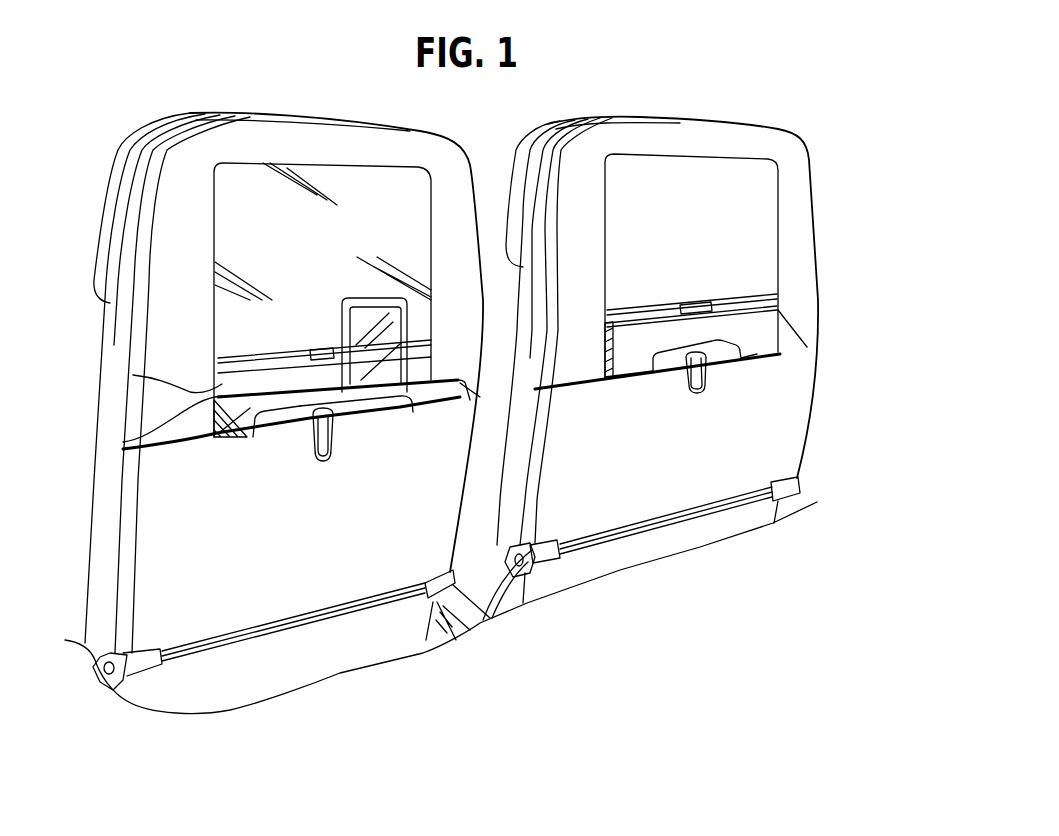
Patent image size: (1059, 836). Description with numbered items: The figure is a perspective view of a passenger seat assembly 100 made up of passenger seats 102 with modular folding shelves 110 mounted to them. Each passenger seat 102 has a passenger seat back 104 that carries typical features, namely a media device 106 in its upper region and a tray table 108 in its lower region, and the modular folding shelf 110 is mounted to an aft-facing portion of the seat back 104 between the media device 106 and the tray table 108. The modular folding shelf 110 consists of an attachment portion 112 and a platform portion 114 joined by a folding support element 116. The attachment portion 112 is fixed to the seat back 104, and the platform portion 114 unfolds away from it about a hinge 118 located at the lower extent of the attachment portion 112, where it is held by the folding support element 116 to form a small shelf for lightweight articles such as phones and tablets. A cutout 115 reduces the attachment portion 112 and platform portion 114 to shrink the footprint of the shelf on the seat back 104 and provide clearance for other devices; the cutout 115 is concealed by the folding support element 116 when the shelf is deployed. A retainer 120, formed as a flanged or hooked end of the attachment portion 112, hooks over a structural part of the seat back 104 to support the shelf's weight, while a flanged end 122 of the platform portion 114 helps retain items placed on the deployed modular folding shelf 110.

The passenger seat assembly 100 is at (716, 66).
The passenger seat 102 is at (312, 126).
The passenger seat back 104 is at (168, 333).
The media device 106 is at (293, 238).
The tray table 108 is at (396, 549).
The modular folding shelf 110 is at (188, 473).
The attachment portion 112 is at (123, 442).
The platform portion 114 is at (410, 404).
The cutout 115 is at (353, 413).
The folding support element 116 is at (255, 437).
The hinge 118 is at (228, 447).
The retainer 120 is at (133, 375).
The flanged end 122 is at (480, 397).